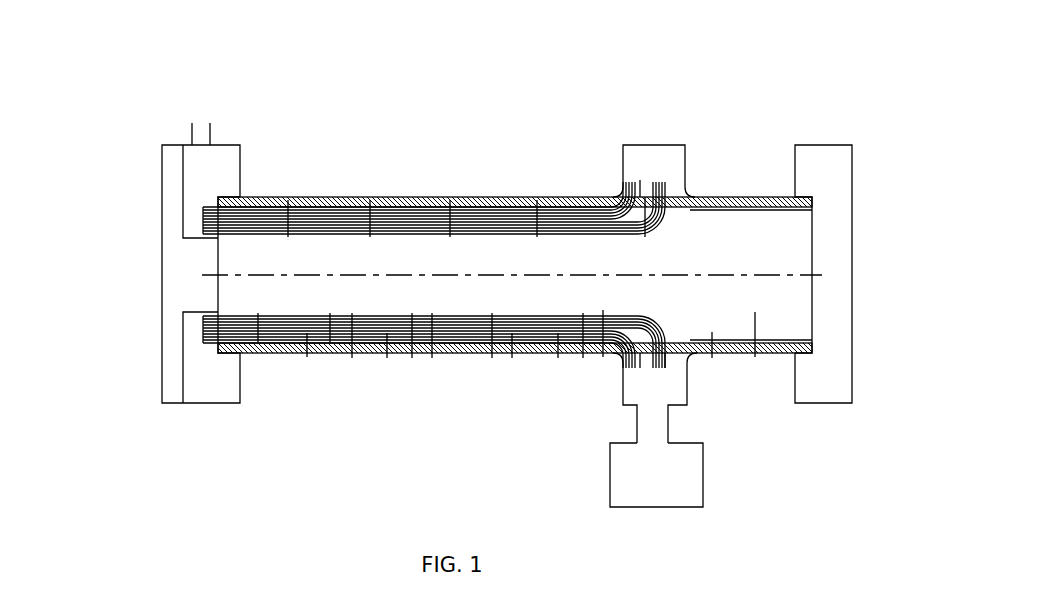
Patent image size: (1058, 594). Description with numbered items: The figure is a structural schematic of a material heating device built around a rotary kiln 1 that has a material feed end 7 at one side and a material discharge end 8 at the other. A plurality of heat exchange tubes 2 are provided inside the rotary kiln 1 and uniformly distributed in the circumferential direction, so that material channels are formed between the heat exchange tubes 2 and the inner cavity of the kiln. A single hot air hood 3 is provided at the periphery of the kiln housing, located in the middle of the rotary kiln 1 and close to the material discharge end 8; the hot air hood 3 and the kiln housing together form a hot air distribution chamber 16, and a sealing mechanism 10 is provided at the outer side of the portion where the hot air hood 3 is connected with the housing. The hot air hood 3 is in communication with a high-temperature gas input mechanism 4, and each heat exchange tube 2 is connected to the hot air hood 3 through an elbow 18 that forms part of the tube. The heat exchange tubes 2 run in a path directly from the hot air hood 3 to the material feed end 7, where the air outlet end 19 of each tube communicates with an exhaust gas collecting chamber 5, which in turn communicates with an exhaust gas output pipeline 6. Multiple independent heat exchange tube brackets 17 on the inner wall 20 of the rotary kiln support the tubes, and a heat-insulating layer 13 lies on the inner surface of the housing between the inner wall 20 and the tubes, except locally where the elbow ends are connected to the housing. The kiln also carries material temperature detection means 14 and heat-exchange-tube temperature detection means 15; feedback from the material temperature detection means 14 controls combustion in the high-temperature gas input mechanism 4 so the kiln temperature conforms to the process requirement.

The rotary kiln 1 is at (515, 207).
The heat exchange tube 2 is at (420, 147).
The hot air hood 3 is at (655, 129).
The high-temperature gas input mechanism 4 is at (715, 493).
The exhaust gas collecting chamber 5 is at (284, 229).
The exhaust gas output pipeline 6 is at (230, 99).
The material feed end 7 is at (141, 274).
The material discharge end 8 is at (876, 274).
The sealing mechanism 10 is at (758, 200).
The heat-insulating layer 13 is at (777, 398).
The material temperature detection means 14 is at (603, 410).
The heat-exchange-tube temperature detection means 15 is at (420, 388).
The hot air distribution chamber 16 is at (649, 125).
The heat exchange tube bracket 17 is at (412, 149).
The elbow 18 is at (760, 320).
The air outlet end 19 is at (125, 225).
The inner wall of rotary kiln 20 is at (746, 135).